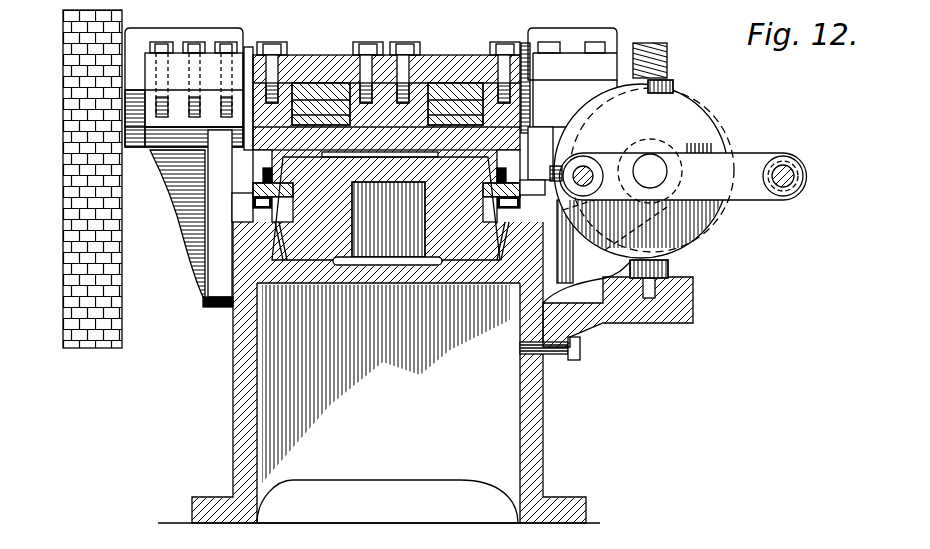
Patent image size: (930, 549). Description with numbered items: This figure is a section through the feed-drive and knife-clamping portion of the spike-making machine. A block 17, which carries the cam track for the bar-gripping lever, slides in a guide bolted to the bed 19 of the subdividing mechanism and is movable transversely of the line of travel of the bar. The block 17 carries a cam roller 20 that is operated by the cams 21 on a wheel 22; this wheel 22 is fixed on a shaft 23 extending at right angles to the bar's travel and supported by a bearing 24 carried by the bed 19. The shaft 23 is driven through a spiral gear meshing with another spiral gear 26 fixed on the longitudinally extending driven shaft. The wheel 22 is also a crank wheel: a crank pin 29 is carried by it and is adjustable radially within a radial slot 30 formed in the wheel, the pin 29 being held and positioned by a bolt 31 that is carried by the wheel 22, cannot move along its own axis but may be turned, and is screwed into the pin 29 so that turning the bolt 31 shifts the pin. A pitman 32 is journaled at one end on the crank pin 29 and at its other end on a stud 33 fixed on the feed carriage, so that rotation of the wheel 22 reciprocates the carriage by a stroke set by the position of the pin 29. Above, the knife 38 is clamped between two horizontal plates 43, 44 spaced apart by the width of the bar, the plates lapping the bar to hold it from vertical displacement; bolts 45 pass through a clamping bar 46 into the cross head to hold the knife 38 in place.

The block 17 is at (693, 297).
The bed 19 is at (543, 392).
The cam roller 20 is at (620, 263).
The cams 21 is at (670, 267).
The wheel 22 is at (690, 122).
The shaft 23 is at (668, 172).
The bearing 24 is at (655, 140).
The spiral gear 26 is at (648, 50).
The crank pin 29 is at (587, 160).
The radial slot 30 is at (626, 143).
The bolt 31 is at (552, 172).
The pitman 32 is at (743, 157).
The stud 33 is at (790, 170).
The knife 38 is at (455, 92).
The horizontal plate 43 is at (462, 60).
The horizontal plate 44 is at (432, 53).
The bolts 45 is at (521, 40).
The clamping bar 46 is at (490, 45).